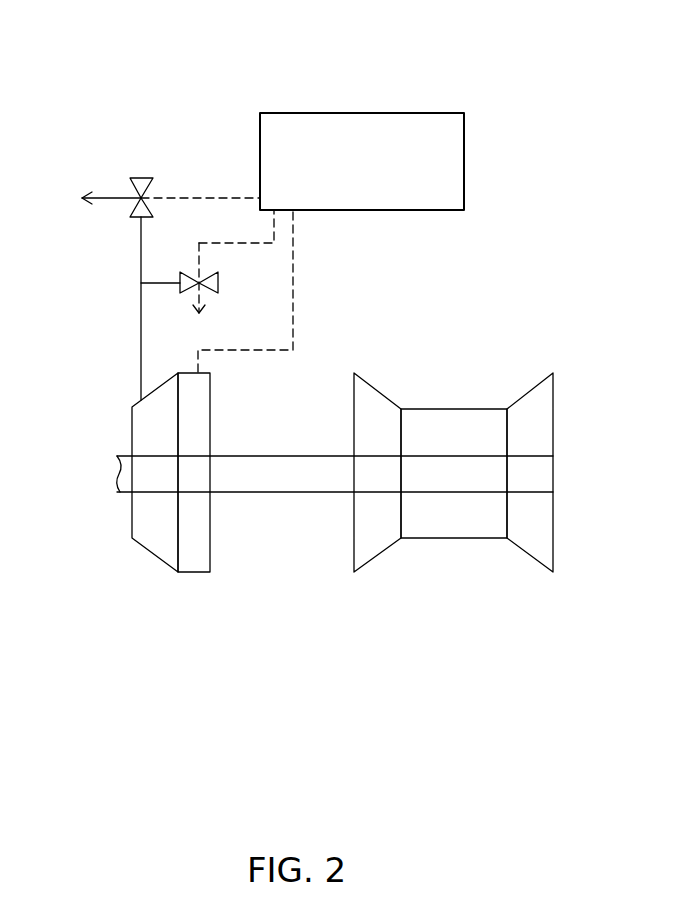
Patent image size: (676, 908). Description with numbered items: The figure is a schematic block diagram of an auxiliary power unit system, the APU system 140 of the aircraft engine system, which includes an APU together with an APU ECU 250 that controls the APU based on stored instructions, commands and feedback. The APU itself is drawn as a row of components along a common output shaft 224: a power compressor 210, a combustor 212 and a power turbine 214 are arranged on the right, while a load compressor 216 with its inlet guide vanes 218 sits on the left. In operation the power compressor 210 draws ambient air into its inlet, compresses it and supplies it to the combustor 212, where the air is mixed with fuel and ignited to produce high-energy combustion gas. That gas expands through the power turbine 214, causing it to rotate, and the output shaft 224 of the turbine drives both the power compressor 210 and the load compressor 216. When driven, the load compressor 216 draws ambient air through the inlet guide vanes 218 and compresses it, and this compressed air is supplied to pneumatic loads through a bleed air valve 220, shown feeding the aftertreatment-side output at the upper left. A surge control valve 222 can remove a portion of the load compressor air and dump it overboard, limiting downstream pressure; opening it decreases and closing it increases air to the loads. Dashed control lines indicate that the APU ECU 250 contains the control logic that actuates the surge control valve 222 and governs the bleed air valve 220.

The APU system 140 is at (542, 105).
The APU ECU 250 is at (305, 136).
The bleed air valve 220 is at (140, 219).
The surge control valve 222 is at (213, 294).
The output shaft 224 is at (273, 493).
The load compressor 216 is at (137, 548).
The inlet guide vanes 218 is at (198, 573).
The power compressor 210 is at (373, 558).
The combustor 212 is at (450, 539).
The power turbine 214 is at (530, 558).